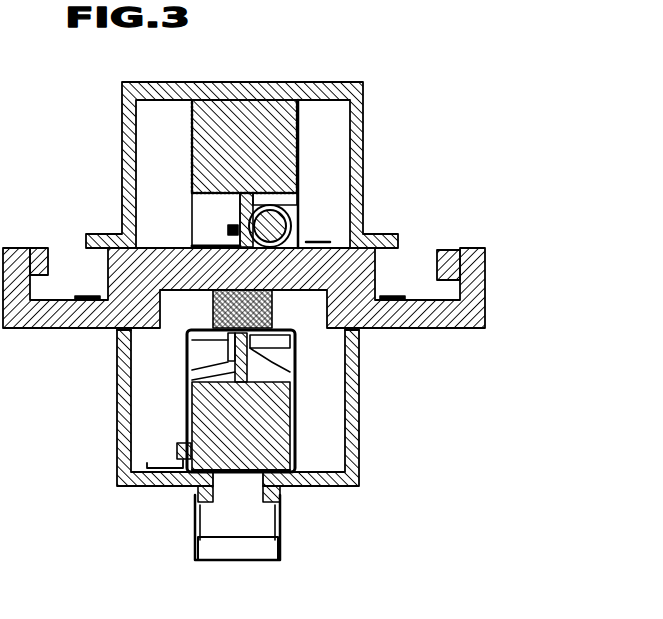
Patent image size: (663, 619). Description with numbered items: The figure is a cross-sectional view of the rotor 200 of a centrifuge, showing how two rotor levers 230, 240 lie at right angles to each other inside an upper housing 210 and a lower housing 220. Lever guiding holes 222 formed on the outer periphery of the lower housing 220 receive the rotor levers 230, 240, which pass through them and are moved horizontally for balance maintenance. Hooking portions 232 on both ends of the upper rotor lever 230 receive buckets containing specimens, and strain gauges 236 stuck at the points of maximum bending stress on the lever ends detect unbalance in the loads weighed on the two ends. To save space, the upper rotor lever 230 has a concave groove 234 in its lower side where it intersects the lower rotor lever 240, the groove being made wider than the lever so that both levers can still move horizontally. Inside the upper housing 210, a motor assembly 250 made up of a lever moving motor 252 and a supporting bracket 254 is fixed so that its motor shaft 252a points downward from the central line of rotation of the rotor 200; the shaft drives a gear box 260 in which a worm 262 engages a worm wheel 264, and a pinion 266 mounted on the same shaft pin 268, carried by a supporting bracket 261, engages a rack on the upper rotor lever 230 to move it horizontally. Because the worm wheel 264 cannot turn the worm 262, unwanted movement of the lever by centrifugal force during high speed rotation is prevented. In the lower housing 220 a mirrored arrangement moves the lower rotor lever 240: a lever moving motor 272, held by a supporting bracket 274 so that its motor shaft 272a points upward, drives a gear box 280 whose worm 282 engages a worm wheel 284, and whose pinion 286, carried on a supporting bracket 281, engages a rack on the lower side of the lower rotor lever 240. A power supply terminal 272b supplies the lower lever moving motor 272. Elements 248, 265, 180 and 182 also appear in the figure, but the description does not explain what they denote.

The upper housing 210 is at (372, 97).
The motor assembly 250 is at (310, 132).
The lever moving motor 252 is at (302, 150).
The supporting bracket 254 is at (302, 168).
The motor shaft 252a is at (309, 206).
The gear box 260 is at (300, 218).
The worm wheel 264 is at (300, 228).
The shaft pin 268 is at (300, 240).
The pinion 266 is at (332, 242).
The worm 262 is at (232, 228).
The supporting bracket 261 is at (228, 243).
The upper rotor lever 230 is at (478, 282).
The hooking portion 232 is at (34, 249).
The strain gauge 236 is at (85, 296).
The concave groove 234 is at (312, 316).
The lower housing 220 is at (336, 487).
The lever guiding hole 222 is at (362, 333).
The rotor 200 is at (312, 514).
The gear box 280 is at (300, 432).
The supporting bracket 281 is at (296, 458).
The supporting bracket 274 is at (292, 400).
The worm 282 is at (294, 350).
The pinion 286 is at (296, 362).
The lower rotor lever 240 is at (230, 340).
The lead 248 is at (228, 355).
The lead 265 is at (228, 370).
The worm wheel 284 is at (236, 378).
The motor shaft 272a is at (190, 418).
The power supply terminal 272b is at (147, 468).
The lever moving motor 272 is at (185, 488).
The socket 180 is at (190, 540).
The cap 182 is at (196, 550).